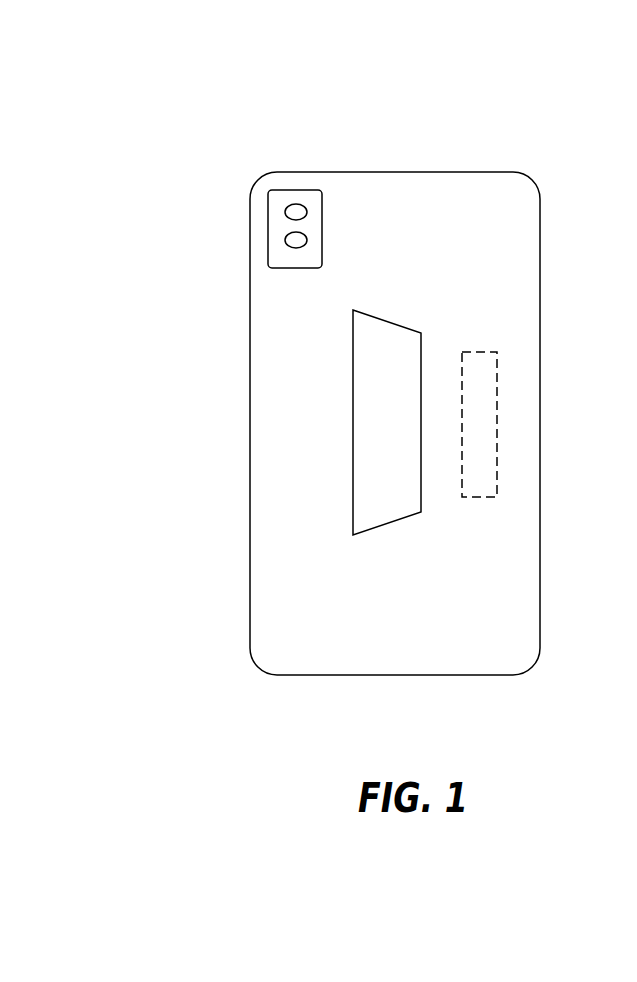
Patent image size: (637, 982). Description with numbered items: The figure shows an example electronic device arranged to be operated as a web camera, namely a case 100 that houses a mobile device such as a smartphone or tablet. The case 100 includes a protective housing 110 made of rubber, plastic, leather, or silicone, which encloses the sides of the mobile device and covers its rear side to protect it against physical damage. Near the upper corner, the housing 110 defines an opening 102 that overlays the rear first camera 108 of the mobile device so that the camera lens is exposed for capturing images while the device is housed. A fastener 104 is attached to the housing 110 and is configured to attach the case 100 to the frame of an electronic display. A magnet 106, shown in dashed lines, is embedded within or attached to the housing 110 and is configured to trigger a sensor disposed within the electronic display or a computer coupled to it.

The case 100 is at (170, 84).
The opening 102 is at (310, 198).
The fastener 104 is at (390, 335).
The magnet 106 is at (481, 358).
The first camera 108 is at (287, 239).
The housing 110 is at (250, 378).